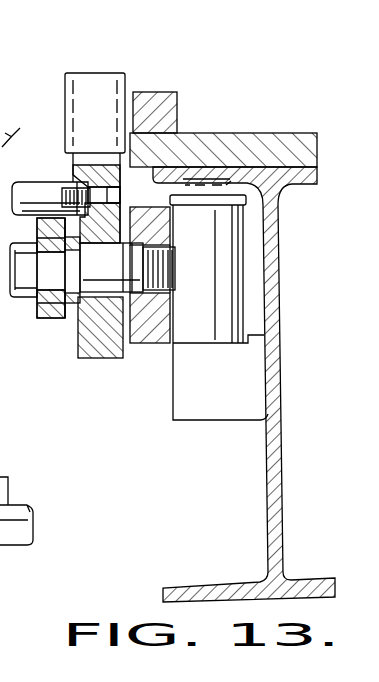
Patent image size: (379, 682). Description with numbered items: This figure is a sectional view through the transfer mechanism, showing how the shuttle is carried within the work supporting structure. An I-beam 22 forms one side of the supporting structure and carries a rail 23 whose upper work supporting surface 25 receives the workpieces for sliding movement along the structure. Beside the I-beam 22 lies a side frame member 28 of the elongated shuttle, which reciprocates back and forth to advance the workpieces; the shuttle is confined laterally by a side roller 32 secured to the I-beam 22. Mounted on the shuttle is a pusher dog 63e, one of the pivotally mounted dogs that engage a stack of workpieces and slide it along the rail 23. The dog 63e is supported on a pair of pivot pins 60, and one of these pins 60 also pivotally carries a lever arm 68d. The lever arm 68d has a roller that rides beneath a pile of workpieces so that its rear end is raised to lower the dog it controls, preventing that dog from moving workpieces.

The I-beam 22 is at (265, 332).
The rail 23 is at (163, 117).
The work supporting surface 25 is at (158, 91).
The side frame member 28 is at (145, 334).
The side roller 32 is at (212, 336).
The pivot pin 60 is at (112, 268).
The dog 63e is at (97, 80).
The lever arm 68d is at (52, 316).